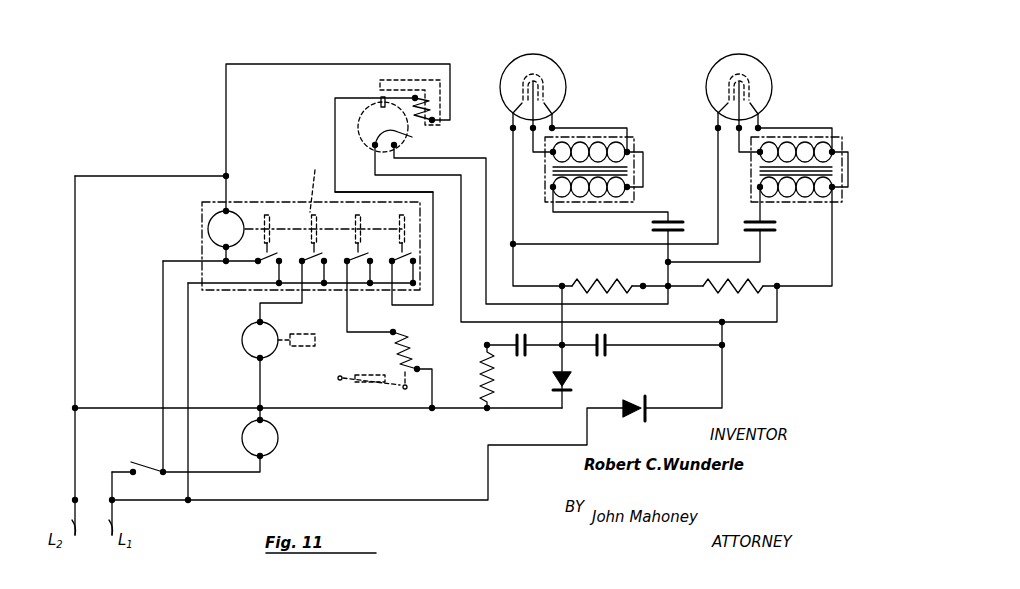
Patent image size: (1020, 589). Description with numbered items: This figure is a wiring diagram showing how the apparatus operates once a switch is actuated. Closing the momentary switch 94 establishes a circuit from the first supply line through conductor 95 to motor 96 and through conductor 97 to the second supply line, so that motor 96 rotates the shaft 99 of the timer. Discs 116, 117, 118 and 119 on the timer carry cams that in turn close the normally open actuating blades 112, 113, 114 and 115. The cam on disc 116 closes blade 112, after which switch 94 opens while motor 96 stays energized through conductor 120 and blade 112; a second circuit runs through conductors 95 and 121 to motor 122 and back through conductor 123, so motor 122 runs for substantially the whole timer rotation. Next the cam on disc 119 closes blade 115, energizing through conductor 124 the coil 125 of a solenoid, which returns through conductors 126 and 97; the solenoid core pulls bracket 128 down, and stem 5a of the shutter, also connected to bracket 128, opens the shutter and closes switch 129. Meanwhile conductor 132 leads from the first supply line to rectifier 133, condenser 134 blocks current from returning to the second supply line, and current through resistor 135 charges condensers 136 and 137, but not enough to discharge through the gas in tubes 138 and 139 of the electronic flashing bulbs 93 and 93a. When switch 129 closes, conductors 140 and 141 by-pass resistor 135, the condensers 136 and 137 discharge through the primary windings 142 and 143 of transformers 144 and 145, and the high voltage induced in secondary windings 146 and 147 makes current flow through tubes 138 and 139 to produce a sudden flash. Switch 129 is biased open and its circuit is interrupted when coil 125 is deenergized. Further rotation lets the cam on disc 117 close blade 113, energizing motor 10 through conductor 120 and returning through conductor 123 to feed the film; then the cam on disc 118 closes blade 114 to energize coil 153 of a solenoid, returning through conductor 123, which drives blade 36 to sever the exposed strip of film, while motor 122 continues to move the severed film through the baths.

The stem 5a is at (380, 97).
The motor 10 is at (243, 333).
The blade 36 is at (364, 388).
The electronic flashing bulb 93 is at (560, 64).
The electronic flashing bulb 93a is at (762, 62).
The switch 94 is at (146, 462).
The conductor 95 is at (163, 307).
The motor 96 is at (208, 226).
The conductor 97 is at (122, 176).
The shaft of the timer 99 is at (295, 212).
The actuating blade 112 is at (272, 283).
The actuating blade 113 is at (306, 257).
The actuating blade 114 is at (355, 257).
The actuating blade 115 is at (398, 257).
The disc 116 is at (263, 214).
The disc 117 is at (317, 180).
The disc 118 is at (370, 197).
The disc 119 is at (400, 227).
The conductor 120 is at (188, 401).
The conductor 121 is at (258, 472).
The motor 122 is at (280, 440).
The conductor 123 is at (122, 408).
The conductor 124 is at (335, 105).
The coil 125 is at (436, 96).
The conductor 126 is at (226, 91).
The bracket 128 is at (405, 80).
The switch 129 is at (398, 143).
The conductor 132 is at (392, 500).
The rectifier 133 is at (649, 405).
The condenser 134 is at (606, 352).
The resistor 135 is at (722, 289).
The condenser 136 is at (685, 222).
The condenser 137 is at (776, 228).
The tube 138 is at (527, 75).
The tube 139 is at (733, 78).
The conductor 140 is at (461, 296).
The conductor 141 is at (490, 244).
The primary winding 142 is at (577, 196).
The primary winding 143 is at (777, 194).
The transformer 144 is at (639, 138).
The transformer 145 is at (843, 138).
The secondary winding 146 is at (584, 144).
The secondary winding 147 is at (778, 147).
The coil 153 is at (396, 358).